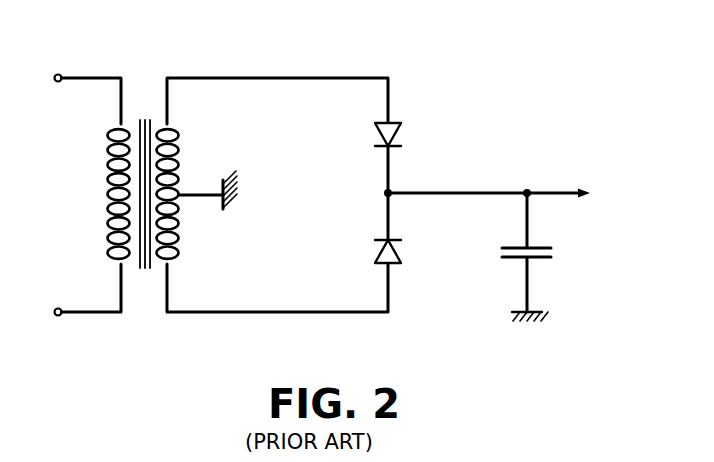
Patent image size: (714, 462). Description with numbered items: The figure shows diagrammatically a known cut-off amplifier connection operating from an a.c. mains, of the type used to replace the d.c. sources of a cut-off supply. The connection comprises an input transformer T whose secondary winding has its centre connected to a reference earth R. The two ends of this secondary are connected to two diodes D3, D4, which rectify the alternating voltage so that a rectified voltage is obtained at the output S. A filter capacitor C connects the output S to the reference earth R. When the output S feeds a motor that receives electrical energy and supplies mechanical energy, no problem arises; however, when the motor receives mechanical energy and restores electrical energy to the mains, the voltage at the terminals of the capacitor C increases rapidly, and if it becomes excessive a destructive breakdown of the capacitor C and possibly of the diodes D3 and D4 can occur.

The input transformer T is at (141, 113).
The reference earth R is at (207, 194).
The diode D3 is at (388, 131).
The diode D4 is at (393, 260).
The filter capacitor C is at (538, 261).
The output S is at (593, 193).